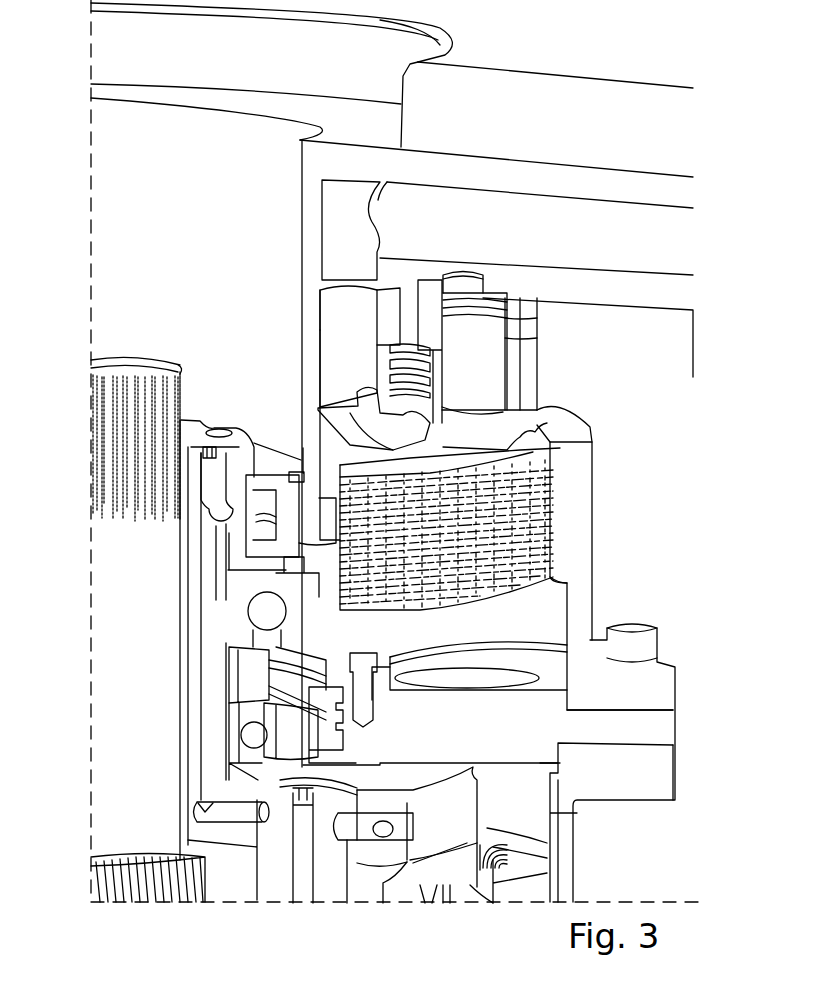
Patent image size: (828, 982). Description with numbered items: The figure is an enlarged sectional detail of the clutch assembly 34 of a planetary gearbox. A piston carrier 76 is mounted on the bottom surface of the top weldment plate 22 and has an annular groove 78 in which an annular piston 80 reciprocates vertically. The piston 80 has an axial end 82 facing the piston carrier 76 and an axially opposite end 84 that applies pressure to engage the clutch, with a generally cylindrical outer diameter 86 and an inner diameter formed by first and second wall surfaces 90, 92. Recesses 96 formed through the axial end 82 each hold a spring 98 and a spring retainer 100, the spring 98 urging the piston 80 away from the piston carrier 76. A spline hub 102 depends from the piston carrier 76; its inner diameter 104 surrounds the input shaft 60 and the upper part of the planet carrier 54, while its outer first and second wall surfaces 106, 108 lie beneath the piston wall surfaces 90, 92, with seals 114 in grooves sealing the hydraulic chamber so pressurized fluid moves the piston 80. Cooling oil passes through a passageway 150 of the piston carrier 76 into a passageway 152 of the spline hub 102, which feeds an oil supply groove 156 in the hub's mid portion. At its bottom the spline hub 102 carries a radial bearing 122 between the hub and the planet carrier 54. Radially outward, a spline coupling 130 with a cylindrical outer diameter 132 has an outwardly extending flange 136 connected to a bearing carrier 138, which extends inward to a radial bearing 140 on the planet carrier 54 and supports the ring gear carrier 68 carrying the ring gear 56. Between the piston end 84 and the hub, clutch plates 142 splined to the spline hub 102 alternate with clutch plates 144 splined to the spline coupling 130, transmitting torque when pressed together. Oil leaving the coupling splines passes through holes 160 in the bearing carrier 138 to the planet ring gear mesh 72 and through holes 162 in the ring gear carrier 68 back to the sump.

The top weldment plate 22 is at (660, 152).
The clutch assembly 34 is at (653, 474).
The planet carrier 54 is at (467, 823).
The ring gear 56 is at (500, 897).
The input shaft 60 is at (95, 580).
The ring gear carrier 68 is at (673, 783).
The planet ring gear mesh 72 is at (470, 868).
The piston carrier 76 is at (682, 302).
The annular groove 78 is at (483, 288).
The piston 80 is at (543, 375).
The axial end 82 is at (427, 278).
The axially opposite end 84 is at (473, 452).
The outer diameter 86 is at (538, 353).
The first wall surface 90 is at (520, 325).
The second wall surface 92 is at (440, 395).
The recesses 96 is at (480, 420).
The spring 98 is at (505, 309).
The spring retainer 100 is at (500, 342).
The spline hub 102 is at (305, 423).
The inner diameter 104 is at (302, 266).
The first wall surface 106 is at (395, 298).
The second wall surface 108 is at (400, 363).
The seals 114 is at (400, 322).
The radial bearing 122 is at (254, 615).
The spline coupling 130 is at (593, 542).
The outer diameter 132 is at (590, 558).
The flange 136 is at (673, 702).
The bearing carrier 138 is at (667, 742).
The radial bearing 140 is at (250, 738).
The clutch plates 142 is at (340, 521).
The clutch plates 144 is at (553, 512).
The passageway 150 is at (517, 236).
The passageway 152 is at (362, 349).
The oil supply groove 156 is at (375, 397).
The holes 160 is at (540, 667).
The holes 162 is at (585, 855).